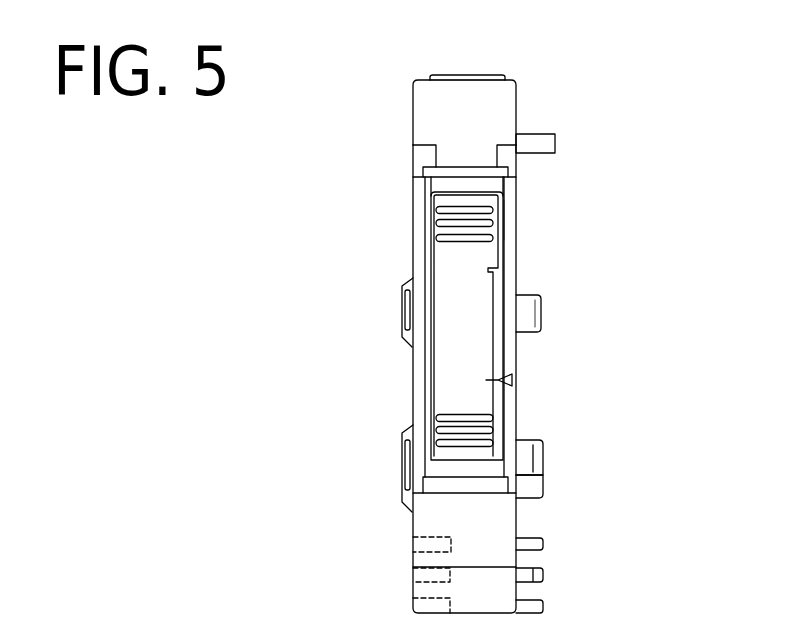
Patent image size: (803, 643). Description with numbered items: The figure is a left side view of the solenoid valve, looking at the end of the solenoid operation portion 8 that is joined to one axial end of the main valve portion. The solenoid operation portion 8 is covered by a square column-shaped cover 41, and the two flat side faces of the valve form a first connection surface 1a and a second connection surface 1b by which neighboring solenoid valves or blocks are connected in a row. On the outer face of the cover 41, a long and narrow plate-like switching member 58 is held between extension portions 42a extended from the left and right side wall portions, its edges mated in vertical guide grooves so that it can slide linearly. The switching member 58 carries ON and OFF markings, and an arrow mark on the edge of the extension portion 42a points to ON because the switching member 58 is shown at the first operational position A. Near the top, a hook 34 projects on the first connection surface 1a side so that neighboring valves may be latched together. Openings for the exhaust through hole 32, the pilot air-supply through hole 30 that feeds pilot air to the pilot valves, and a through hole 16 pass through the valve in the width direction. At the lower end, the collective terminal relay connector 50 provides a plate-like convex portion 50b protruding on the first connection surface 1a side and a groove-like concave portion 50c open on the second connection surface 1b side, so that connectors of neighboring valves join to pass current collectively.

The solenoid operation portion 8 is at (523, 93).
The first connection surface 1a is at (517, 110).
The second connection surface 1b is at (413, 128).
The cover 41 is at (409, 89).
The extension portions 42a is at (425, 250).
The switching member 58 is at (453, 340).
The first operational position A is at (511, 223).
The hook 34 is at (548, 145).
The exhaust through hole 32 is at (530, 315).
The pilot air-supply through hole 30 is at (530, 452).
The through hole 16 is at (532, 486).
The collective terminal relay connector 50 is at (558, 563).
The convex portion 50b is at (543, 575).
The concave portion 50c is at (410, 570).